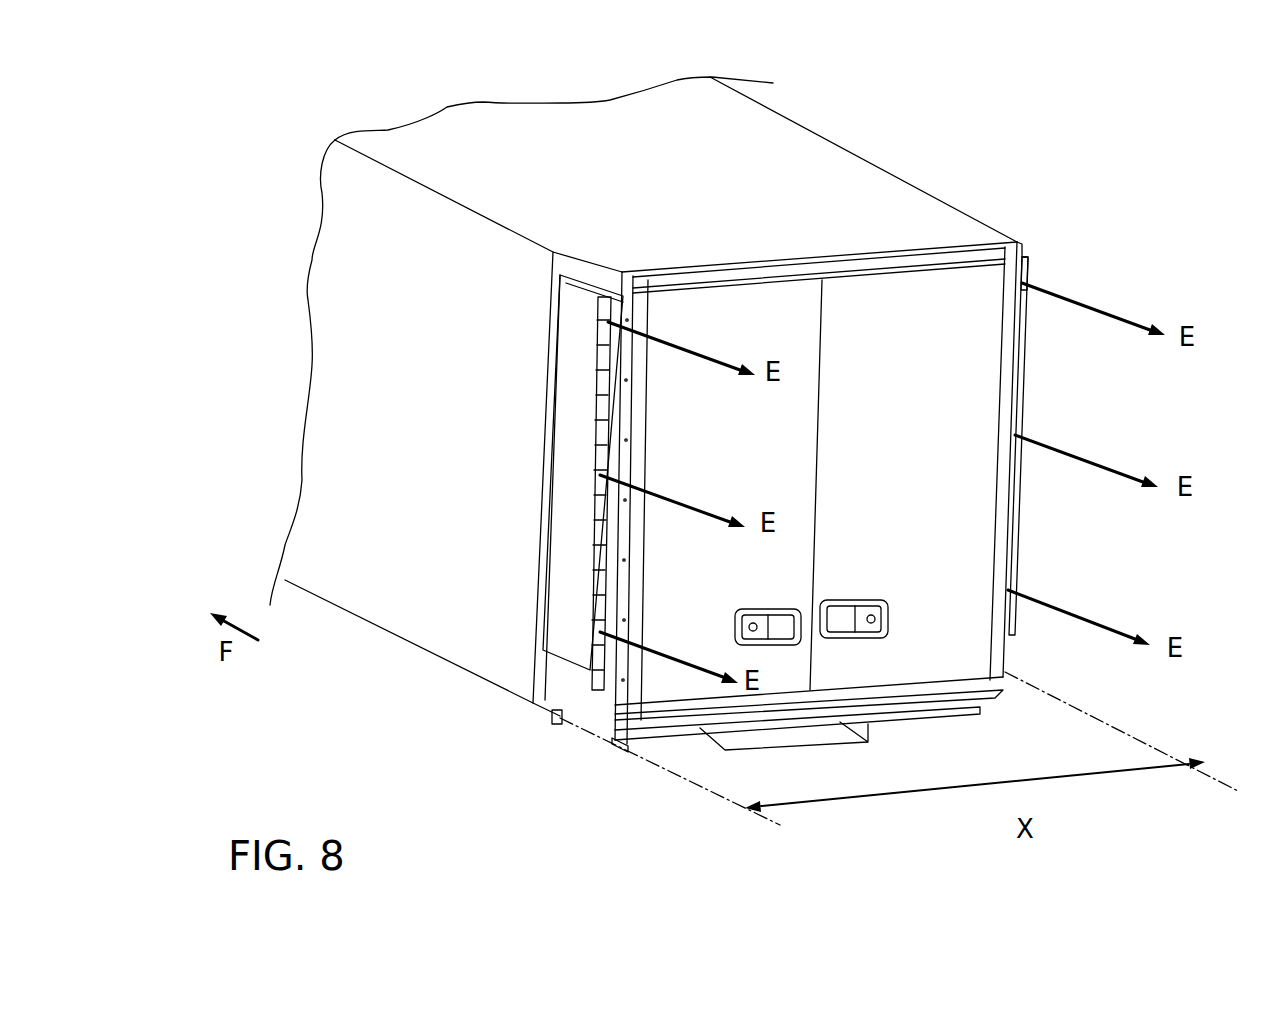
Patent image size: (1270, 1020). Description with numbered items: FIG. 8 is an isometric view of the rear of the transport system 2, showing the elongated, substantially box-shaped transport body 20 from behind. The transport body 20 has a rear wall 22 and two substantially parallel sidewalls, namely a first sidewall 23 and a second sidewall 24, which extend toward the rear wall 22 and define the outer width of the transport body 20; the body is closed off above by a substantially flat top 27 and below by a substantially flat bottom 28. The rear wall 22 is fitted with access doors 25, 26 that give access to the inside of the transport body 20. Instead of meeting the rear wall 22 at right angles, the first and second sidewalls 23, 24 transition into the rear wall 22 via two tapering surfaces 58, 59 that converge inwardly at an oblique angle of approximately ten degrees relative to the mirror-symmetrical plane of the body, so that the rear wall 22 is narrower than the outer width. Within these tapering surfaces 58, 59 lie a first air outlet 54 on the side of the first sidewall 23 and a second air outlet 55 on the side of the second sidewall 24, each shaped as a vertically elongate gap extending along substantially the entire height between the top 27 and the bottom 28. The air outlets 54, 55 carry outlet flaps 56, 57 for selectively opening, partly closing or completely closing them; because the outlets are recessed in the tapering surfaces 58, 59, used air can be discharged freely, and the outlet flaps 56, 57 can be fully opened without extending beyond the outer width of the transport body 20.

The transport system 2 is at (972, 142).
The transport body 20 is at (818, 138).
The rear wall 22 is at (900, 668).
The first sidewall 23 is at (962, 228).
The second sidewall 24 is at (335, 595).
The access door 25 is at (750, 300).
The access door 26 is at (884, 306).
The top 27 is at (432, 170).
The bottom 28 is at (500, 650).
The first air outlet 54 is at (1020, 382).
The second air outlet 55 is at (602, 395).
The outlet flap 56 is at (1030, 318).
The outlet flap 57 is at (578, 378).
The tapering surface 58 is at (990, 232).
The tapering surface 59 is at (562, 752).